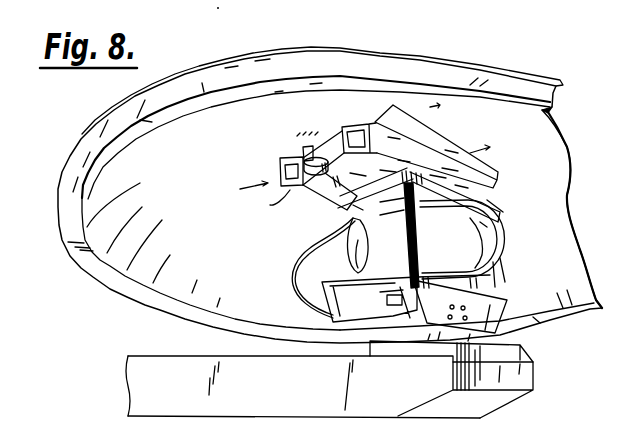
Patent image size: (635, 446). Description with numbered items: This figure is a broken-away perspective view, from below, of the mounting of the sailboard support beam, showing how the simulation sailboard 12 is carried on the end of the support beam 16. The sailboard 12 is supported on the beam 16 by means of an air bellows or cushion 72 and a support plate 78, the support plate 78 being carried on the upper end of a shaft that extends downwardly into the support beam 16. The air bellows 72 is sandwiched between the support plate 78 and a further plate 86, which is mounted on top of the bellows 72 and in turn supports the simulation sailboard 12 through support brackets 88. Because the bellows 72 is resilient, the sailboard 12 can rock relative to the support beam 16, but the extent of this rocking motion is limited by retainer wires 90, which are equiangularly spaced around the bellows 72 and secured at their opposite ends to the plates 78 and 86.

The simulation sailboard 12 is at (136, 104).
The support beam 16 is at (186, 368).
The air bellows 72 is at (496, 226).
The support plate 78 is at (322, 308).
The further plate 86 is at (494, 178).
The support brackets 88 is at (425, 146).
The retainer wires 90 is at (312, 256).